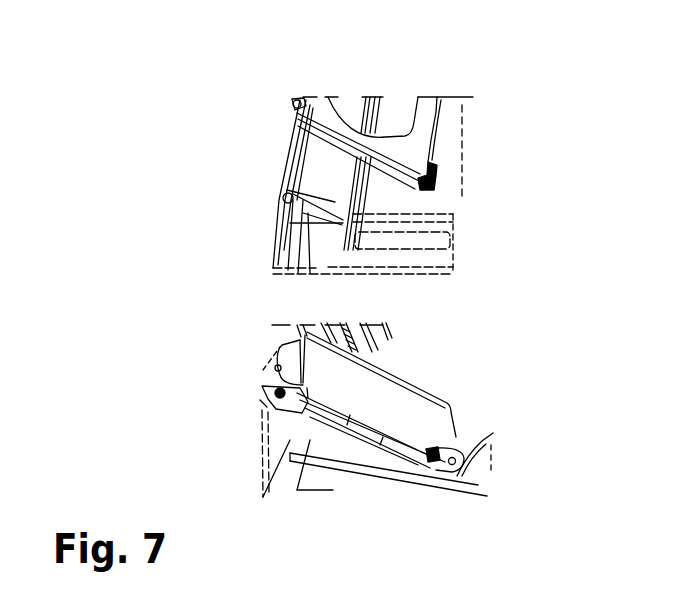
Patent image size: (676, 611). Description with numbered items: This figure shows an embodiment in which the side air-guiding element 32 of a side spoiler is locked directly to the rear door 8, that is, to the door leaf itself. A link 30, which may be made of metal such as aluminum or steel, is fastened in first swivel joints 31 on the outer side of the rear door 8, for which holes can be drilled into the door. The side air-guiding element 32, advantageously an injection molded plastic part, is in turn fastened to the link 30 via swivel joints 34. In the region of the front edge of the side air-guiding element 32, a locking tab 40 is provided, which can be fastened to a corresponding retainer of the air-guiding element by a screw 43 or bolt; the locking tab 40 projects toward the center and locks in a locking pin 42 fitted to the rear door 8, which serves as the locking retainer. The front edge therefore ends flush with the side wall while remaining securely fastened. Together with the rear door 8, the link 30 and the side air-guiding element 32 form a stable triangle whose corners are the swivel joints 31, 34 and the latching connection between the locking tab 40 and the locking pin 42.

The rear door 8 is at (432, 204).
The link 30 is at (437, 97).
The first swivel joint 31 is at (436, 165).
The side air-guiding element 32 is at (277, 210).
The swivel joint 34 is at (292, 100).
The locking tab 40 is at (307, 272).
The locking pin 42 is at (428, 470).
The screw 43 is at (278, 393).